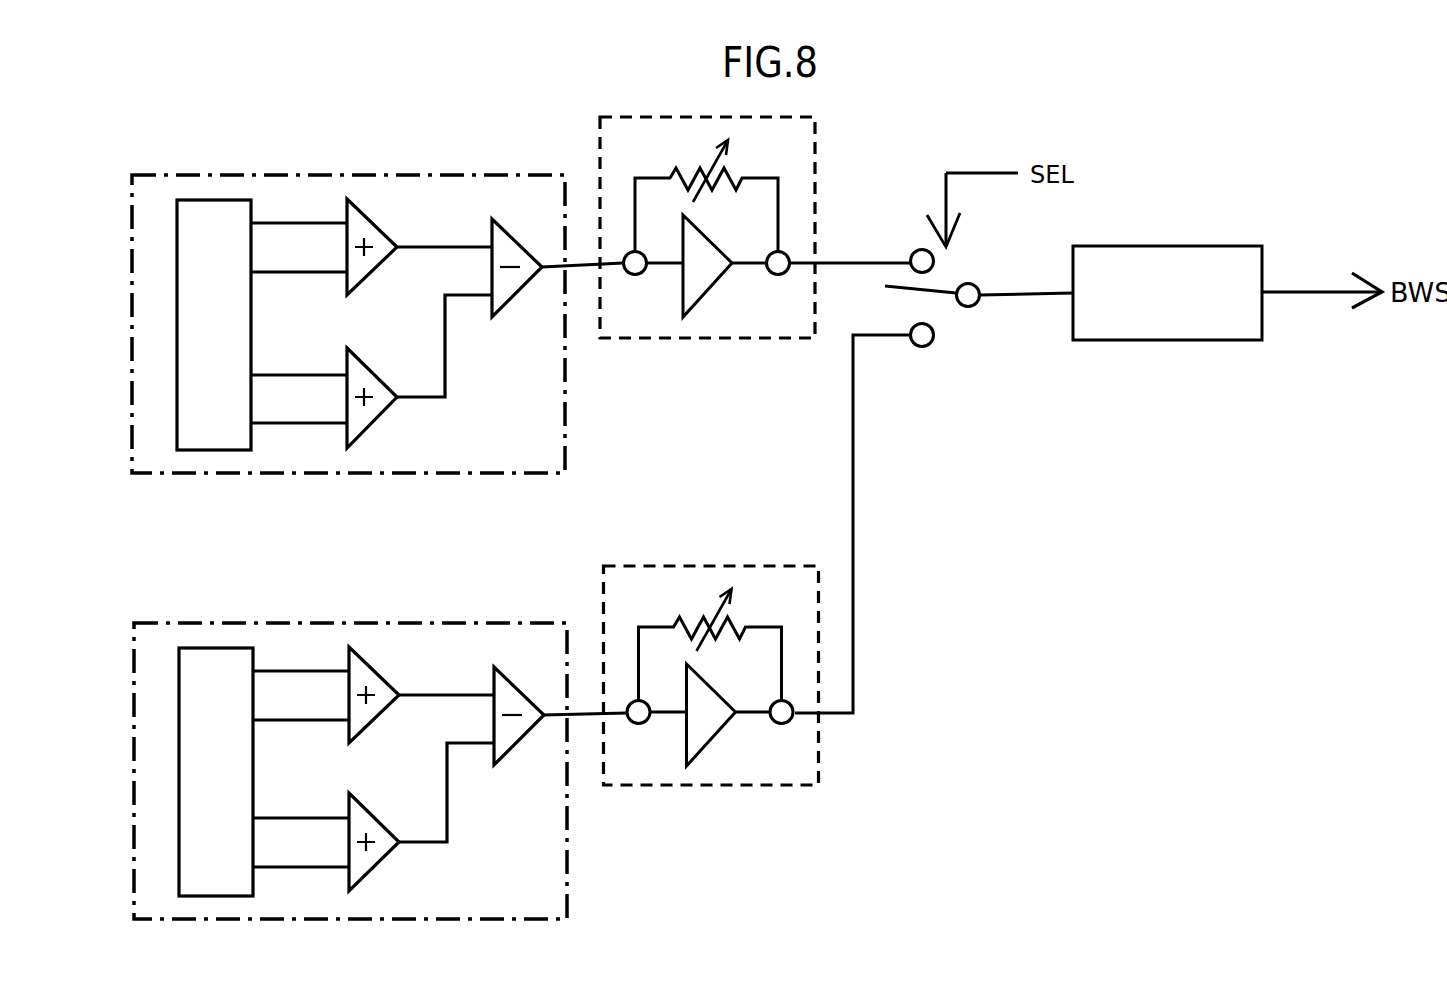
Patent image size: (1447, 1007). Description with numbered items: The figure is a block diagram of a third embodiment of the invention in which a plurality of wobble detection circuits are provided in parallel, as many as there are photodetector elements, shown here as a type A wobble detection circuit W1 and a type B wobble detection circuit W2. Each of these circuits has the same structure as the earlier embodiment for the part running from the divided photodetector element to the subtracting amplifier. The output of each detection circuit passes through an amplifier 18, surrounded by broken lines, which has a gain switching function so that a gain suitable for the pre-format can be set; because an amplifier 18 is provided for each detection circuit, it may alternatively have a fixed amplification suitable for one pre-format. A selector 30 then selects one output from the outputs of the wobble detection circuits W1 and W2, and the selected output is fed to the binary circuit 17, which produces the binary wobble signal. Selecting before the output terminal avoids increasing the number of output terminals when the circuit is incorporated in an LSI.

The binary circuit 17 is at (1153, 340).
The amplifier 18 is at (720, 338).
The selector 30 is at (972, 306).
The type A wobble detection circuit W1 is at (376, 163).
The type B wobble detection circuit W2 is at (422, 614).